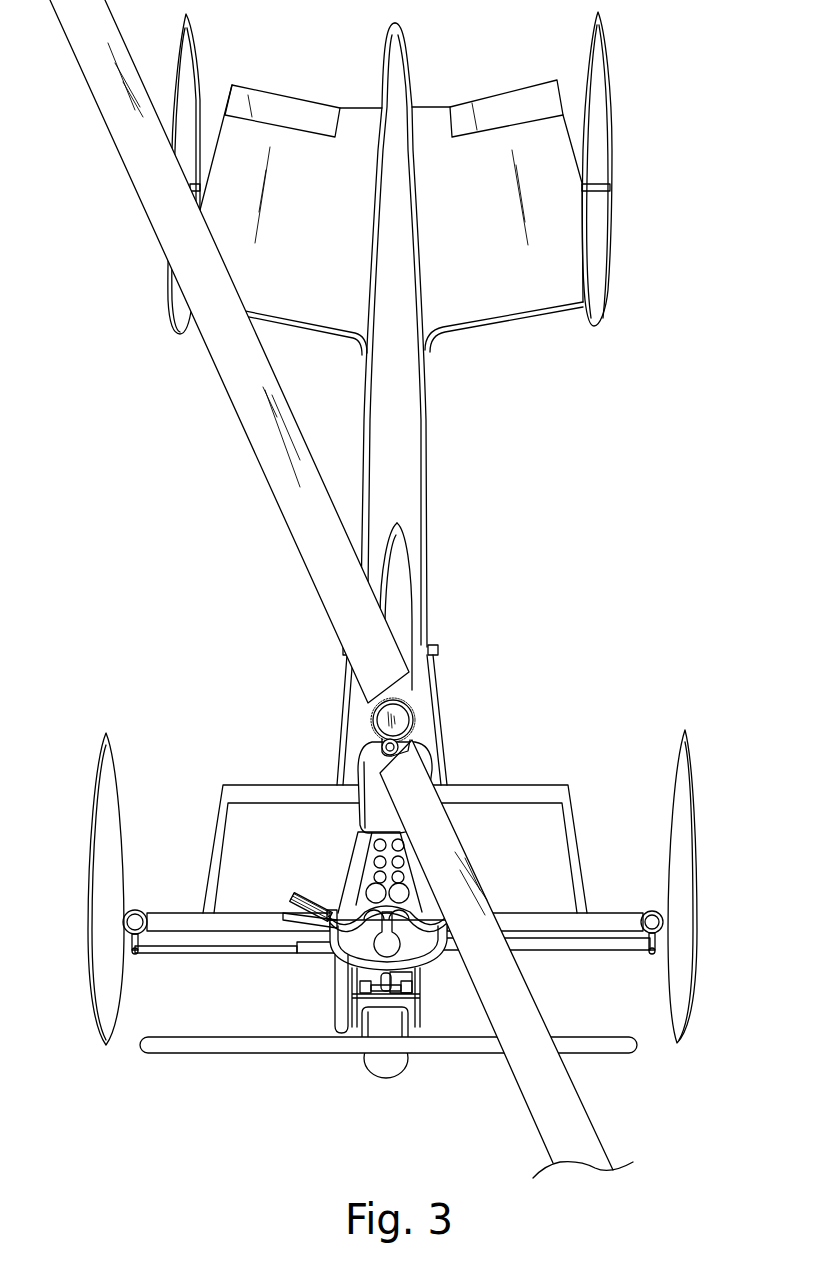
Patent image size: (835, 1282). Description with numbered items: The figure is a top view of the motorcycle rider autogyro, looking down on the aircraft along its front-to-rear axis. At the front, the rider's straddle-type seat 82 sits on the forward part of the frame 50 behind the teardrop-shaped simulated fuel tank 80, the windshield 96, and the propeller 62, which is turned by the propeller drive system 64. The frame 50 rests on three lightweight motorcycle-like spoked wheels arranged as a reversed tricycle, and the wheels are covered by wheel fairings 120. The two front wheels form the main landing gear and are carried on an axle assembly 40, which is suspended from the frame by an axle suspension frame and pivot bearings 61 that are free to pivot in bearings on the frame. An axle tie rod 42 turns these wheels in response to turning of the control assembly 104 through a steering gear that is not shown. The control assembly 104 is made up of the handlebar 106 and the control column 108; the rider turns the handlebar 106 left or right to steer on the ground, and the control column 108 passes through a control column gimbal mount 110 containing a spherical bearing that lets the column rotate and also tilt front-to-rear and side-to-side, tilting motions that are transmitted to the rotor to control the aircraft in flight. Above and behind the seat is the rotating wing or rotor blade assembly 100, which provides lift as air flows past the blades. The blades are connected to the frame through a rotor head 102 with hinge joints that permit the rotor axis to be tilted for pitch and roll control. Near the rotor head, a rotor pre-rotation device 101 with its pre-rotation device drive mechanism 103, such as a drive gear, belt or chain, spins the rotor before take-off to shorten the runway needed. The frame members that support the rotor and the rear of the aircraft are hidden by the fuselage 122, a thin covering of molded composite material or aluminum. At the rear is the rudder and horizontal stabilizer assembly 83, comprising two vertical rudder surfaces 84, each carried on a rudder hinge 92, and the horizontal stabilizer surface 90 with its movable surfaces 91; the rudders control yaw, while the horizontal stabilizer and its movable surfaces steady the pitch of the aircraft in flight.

The axle assembly 40 is at (587, 922).
The axle tie rod 42 is at (615, 950).
The frame 50 is at (353, 980).
The axle suspension frame and pivot bearings 61 is at (340, 720).
The propeller 62 is at (242, 1045).
The propeller drive system 64 is at (333, 1018).
The teardrop-shaped simulated fuel tank 80 is at (353, 858).
The straddle-type seat 82 is at (368, 765).
The rudder and horizontal stabilizer assembly 83 is at (510, 302).
The rudder surface 84 is at (183, 88).
The horizontal stabilizer surface 90 is at (425, 120).
The movable surfaces 91 is at (297, 105).
The rudder hinge 92 is at (603, 180).
The windshield 96 is at (347, 953).
The rotor blade assembly 100 is at (237, 365).
The rotor pre-rotation device 101 is at (400, 745).
The rotor head 102 is at (393, 712).
The pre-rotation device drive mechanism 103 is at (413, 720).
The control assembly 104 is at (283, 920).
The handlebar 106 is at (293, 893).
The control column 108 is at (405, 978).
The control column gimbal mount 110 is at (397, 987).
The wheel fairing 120 is at (98, 845).
The fuselage 122 is at (403, 437).